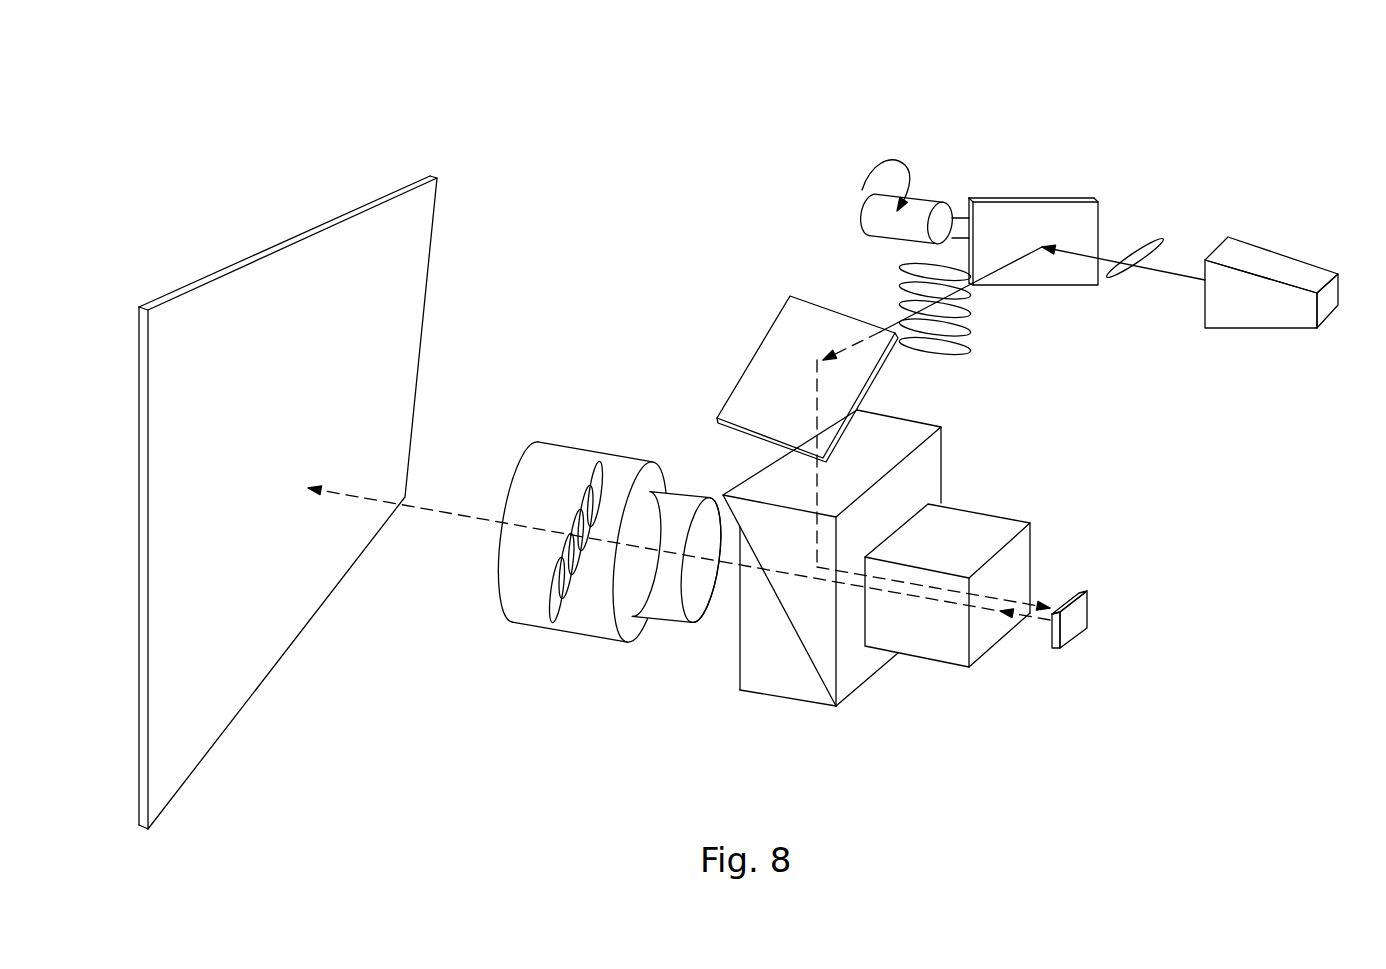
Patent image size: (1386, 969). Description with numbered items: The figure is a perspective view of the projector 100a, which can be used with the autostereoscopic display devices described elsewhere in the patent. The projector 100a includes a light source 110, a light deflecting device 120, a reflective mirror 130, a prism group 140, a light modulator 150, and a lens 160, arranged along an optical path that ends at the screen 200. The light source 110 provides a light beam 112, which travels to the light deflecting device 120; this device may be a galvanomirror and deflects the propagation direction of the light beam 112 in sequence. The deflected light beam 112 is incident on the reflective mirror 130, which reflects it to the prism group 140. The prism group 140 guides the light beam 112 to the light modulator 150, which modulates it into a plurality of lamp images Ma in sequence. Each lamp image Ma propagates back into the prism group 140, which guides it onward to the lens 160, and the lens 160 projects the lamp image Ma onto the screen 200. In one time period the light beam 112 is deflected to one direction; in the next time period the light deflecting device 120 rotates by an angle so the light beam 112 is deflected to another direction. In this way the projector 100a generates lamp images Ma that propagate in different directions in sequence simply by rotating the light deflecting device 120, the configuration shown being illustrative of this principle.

The projector 100a is at (936, 110).
The light source 110 is at (1267, 263).
The light beam 112 is at (1121, 284).
The light deflecting device 120 is at (1065, 217).
The reflective mirror 130 is at (818, 327).
The prism group 140 is at (760, 678).
The light modulator 150 is at (1073, 631).
The lens 160 is at (583, 584).
The lamp image Ma is at (552, 605).
The screen 200 is at (413, 231).